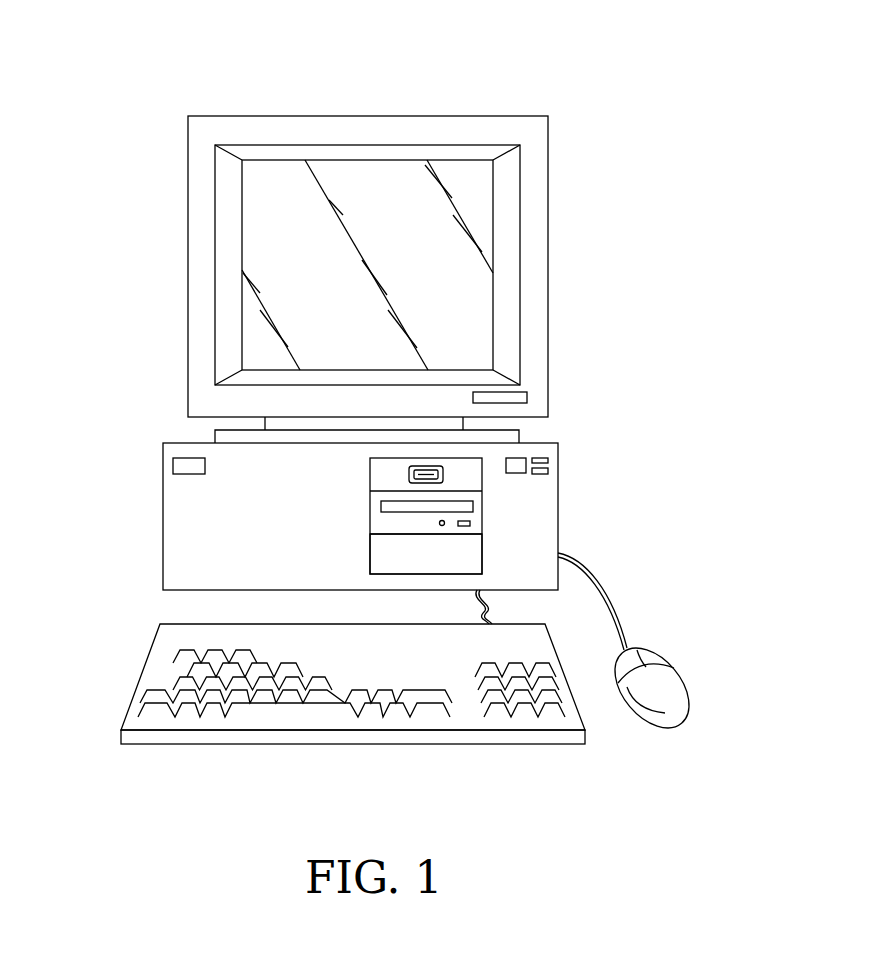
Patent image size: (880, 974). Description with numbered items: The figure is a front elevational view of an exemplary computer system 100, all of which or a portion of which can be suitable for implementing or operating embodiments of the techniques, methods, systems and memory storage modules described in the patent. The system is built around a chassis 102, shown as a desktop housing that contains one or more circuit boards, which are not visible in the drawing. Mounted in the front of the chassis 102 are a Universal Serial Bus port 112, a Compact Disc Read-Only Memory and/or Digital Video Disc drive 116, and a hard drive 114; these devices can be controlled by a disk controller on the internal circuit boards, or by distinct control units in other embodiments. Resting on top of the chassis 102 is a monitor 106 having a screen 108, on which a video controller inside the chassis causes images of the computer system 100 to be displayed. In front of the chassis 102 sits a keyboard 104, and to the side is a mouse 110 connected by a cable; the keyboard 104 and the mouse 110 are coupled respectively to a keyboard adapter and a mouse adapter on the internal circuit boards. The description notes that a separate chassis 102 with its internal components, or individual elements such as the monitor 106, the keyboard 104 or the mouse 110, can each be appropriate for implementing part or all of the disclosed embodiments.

The computer system 100 is at (547, 86).
The chassis 102 is at (163, 518).
The keyboard 104 is at (142, 673).
The monitor 106 is at (262, 116).
The screen 108 is at (288, 270).
The mouse 110 is at (670, 677).
The Universal Serial Bus (USB) port 112 is at (447, 470).
The hard drive 114 is at (475, 553).
The Compact Disc Read-Only Memory (CD-ROM) and/or Digital Video Disc (DVD) drive 116 is at (475, 512).